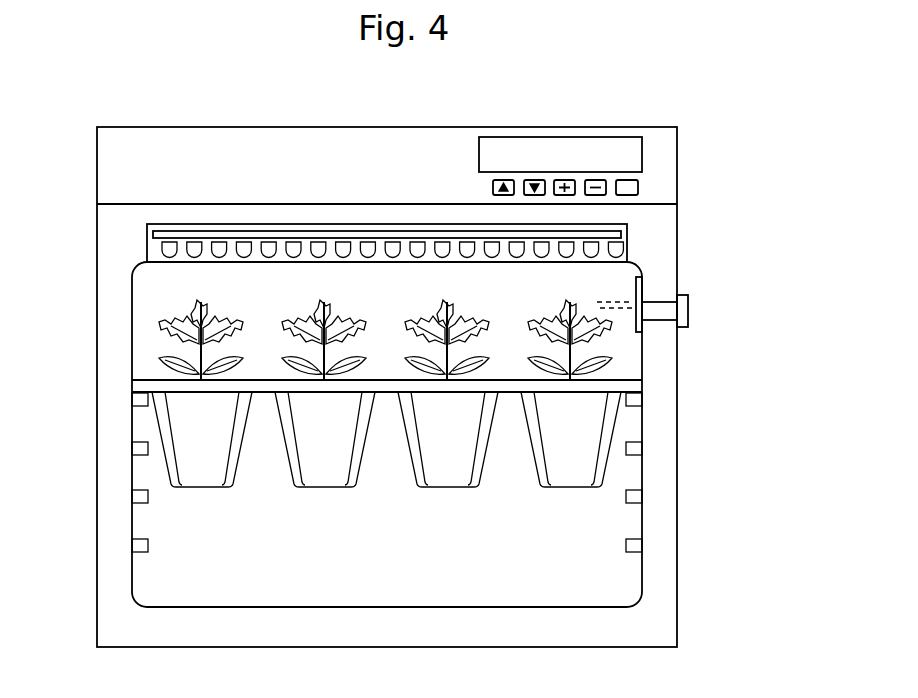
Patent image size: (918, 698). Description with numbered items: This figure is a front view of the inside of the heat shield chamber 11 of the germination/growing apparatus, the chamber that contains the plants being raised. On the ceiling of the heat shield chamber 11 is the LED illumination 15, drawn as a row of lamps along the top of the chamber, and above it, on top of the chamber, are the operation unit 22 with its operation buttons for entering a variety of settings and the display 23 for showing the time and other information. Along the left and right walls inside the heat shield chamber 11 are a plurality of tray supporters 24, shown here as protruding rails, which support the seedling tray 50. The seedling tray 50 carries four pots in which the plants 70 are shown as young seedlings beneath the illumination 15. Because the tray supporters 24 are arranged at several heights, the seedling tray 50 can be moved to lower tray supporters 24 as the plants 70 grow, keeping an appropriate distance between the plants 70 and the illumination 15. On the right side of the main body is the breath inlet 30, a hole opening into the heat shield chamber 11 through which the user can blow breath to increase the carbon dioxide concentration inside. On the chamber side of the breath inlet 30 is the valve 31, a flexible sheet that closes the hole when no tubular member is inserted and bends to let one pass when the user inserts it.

The heat shield chamber 11 is at (567, 567).
The LED illumination 15 is at (291, 253).
The operation unit 22 is at (492, 187).
The display 23 is at (486, 146).
The tray supporter 24 is at (148, 548).
The breath inlet 30 is at (695, 293).
The valve 31 is at (641, 275).
The seedling tray 50 is at (338, 487).
The plant 70 is at (416, 318).